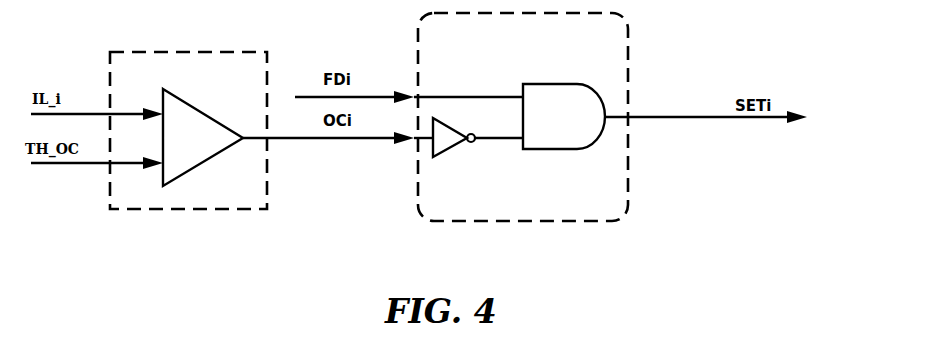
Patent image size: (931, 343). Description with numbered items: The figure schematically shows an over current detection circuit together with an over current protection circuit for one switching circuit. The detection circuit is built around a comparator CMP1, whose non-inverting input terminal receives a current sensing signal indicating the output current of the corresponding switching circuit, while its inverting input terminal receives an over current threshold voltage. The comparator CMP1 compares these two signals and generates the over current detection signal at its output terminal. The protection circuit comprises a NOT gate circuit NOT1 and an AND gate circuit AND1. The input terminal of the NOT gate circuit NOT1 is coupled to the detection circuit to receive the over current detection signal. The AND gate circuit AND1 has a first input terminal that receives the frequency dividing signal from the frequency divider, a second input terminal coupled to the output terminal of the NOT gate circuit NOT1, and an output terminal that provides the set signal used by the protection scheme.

The comparator CMP1 is at (203, 140).
The NOT gate circuit NOT1 is at (456, 151).
The AND gate circuit AND1 is at (564, 116).